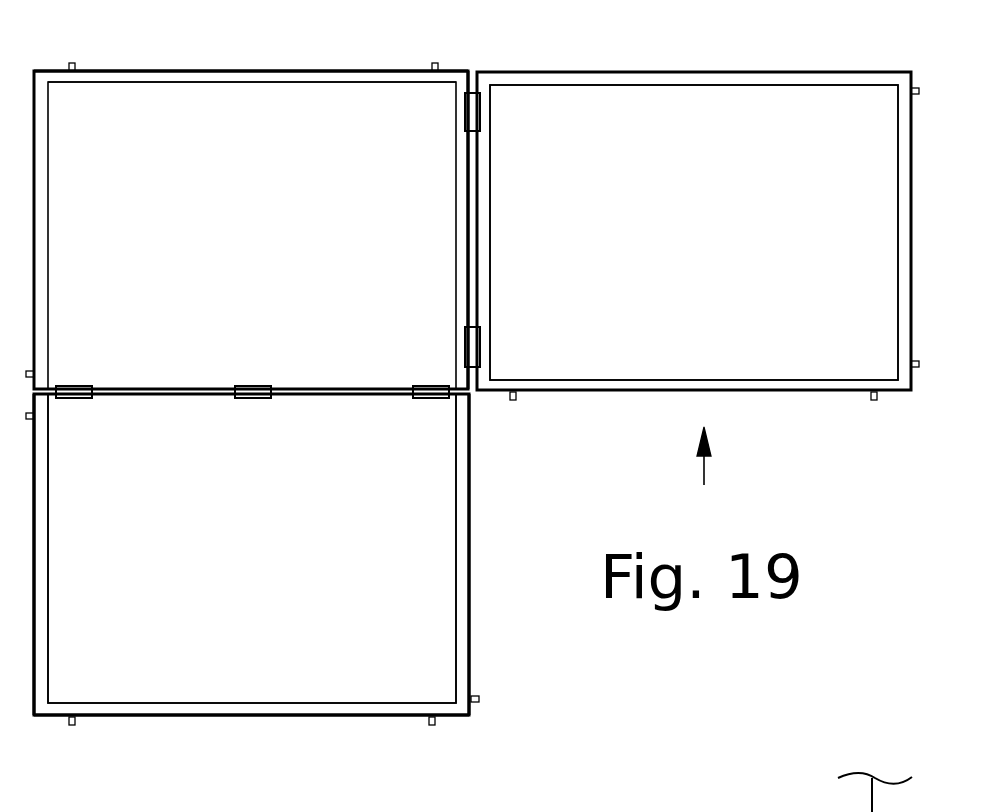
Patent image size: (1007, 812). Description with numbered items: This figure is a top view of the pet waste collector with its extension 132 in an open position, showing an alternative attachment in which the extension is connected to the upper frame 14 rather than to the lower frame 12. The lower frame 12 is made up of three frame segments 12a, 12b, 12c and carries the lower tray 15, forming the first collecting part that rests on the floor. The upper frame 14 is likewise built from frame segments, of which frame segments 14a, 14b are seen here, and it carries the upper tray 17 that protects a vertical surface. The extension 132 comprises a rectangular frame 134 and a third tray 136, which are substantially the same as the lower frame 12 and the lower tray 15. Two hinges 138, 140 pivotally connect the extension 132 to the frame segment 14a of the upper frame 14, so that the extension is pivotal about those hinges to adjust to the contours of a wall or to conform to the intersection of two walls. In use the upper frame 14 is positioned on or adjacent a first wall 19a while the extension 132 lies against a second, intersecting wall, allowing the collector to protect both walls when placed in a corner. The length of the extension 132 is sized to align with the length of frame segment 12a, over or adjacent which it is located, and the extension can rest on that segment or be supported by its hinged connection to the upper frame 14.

The lower frame 12 is at (150, 706).
The frame segment 12a is at (463, 588).
The frame segment 12b is at (360, 710).
The frame segment 12c is at (40, 563).
The upper frame 14 is at (240, 72).
The frame segment 14a is at (464, 192).
The frame segment 14b is at (128, 75).
The lower tray 15 is at (253, 672).
The upper tray 17 is at (376, 100).
The first wall 19a is at (845, 811).
The extension 132 is at (706, 475).
The rectangular frame 134 is at (748, 78).
The third tray 136 is at (640, 110).
The hinge 138 is at (475, 106).
The hinge 140 is at (476, 342).